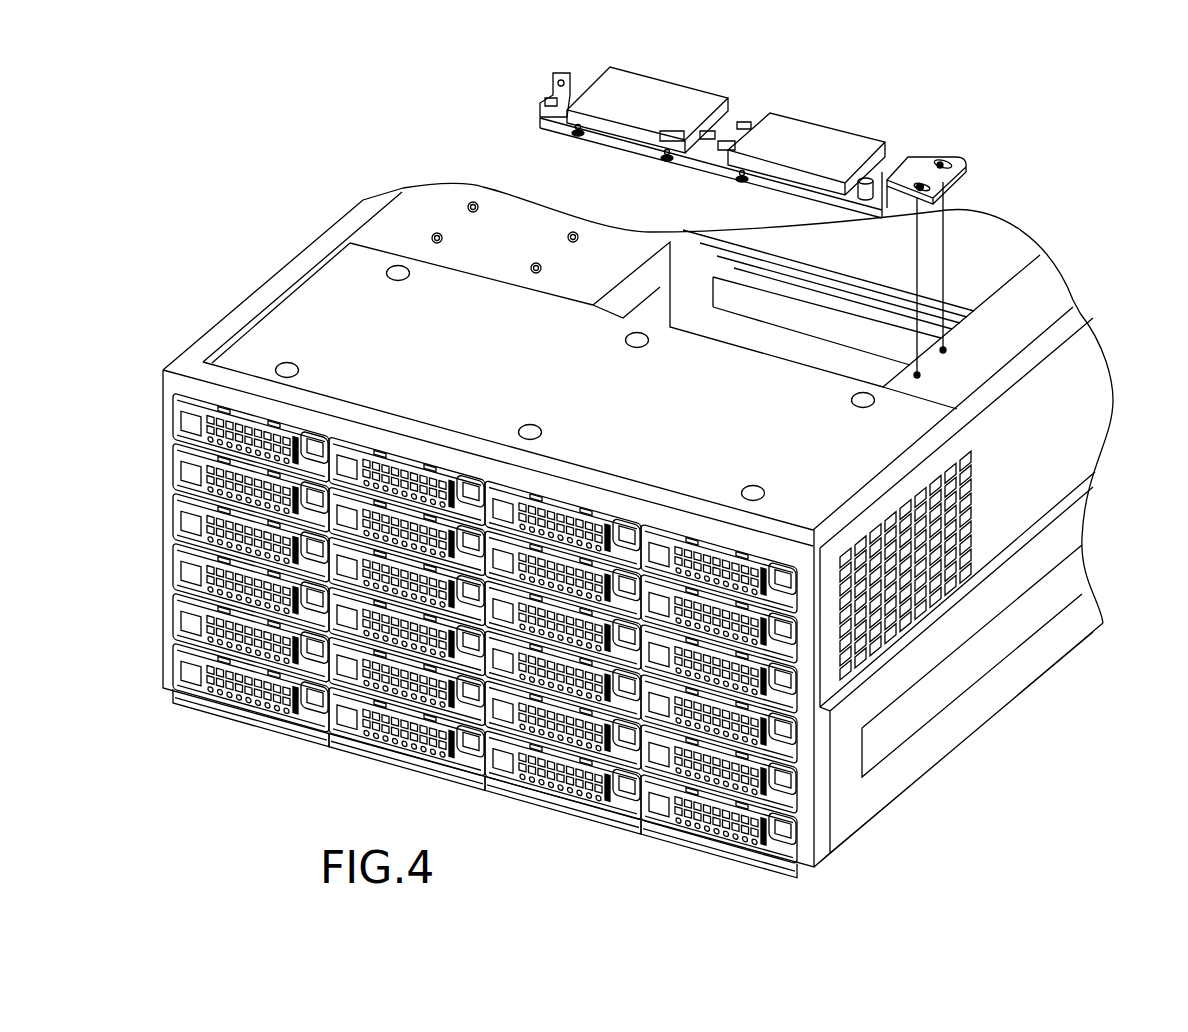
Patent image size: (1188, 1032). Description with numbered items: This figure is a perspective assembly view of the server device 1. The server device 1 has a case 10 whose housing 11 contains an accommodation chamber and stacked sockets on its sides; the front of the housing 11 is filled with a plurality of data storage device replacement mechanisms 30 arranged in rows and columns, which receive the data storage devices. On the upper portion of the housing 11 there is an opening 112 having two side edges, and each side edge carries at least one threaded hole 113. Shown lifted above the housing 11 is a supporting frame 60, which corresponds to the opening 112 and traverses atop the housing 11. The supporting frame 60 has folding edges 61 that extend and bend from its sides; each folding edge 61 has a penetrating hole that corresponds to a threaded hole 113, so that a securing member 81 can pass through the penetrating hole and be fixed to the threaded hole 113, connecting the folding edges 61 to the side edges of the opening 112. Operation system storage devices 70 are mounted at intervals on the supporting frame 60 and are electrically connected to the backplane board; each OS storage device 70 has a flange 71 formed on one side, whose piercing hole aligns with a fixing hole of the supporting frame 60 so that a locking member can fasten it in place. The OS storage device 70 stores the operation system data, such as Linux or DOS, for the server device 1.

The server device 1 is at (450, 111).
The case 10 is at (262, 248).
The housing 11 is at (247, 310).
The data storage device replacement mechanism 30 is at (160, 408).
The opening 112 is at (660, 290).
The threaded hole 113 is at (944, 350).
The operation system (OS) storage device 70 is at (806, 132).
The flange 71 is at (864, 176).
The supporting frame 60 is at (898, 150).
The folding edge 61 is at (935, 158).
The securing member 81 is at (938, 180).